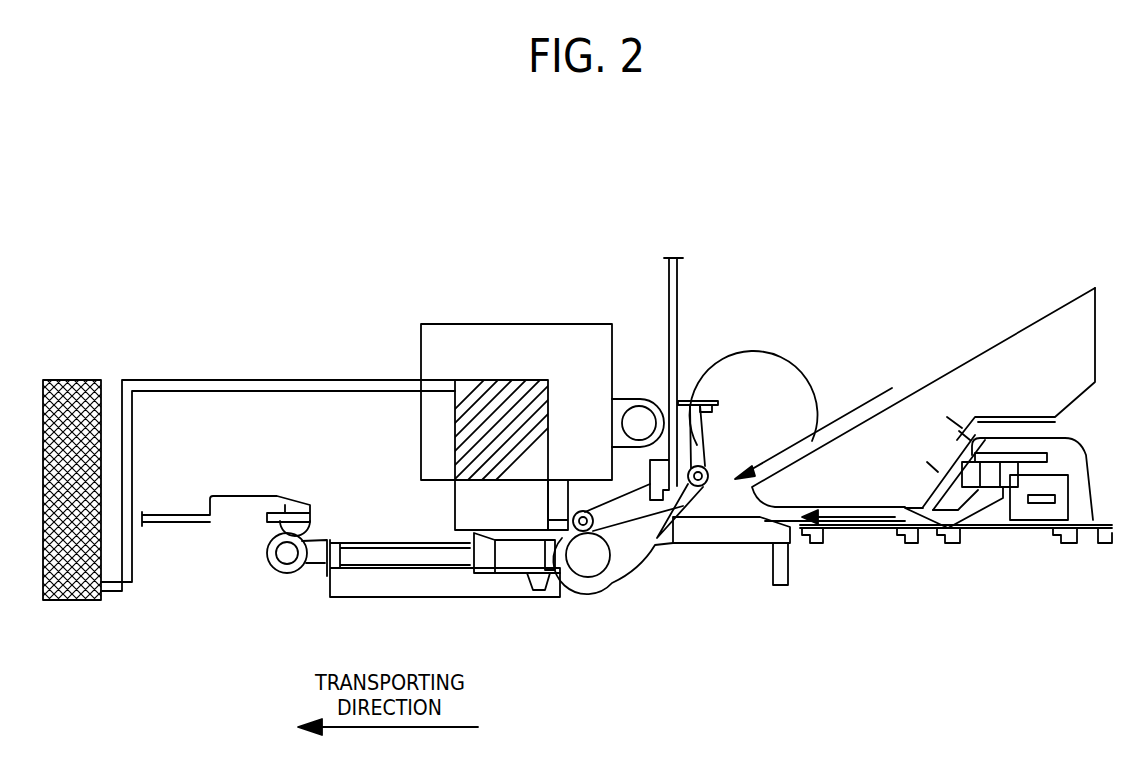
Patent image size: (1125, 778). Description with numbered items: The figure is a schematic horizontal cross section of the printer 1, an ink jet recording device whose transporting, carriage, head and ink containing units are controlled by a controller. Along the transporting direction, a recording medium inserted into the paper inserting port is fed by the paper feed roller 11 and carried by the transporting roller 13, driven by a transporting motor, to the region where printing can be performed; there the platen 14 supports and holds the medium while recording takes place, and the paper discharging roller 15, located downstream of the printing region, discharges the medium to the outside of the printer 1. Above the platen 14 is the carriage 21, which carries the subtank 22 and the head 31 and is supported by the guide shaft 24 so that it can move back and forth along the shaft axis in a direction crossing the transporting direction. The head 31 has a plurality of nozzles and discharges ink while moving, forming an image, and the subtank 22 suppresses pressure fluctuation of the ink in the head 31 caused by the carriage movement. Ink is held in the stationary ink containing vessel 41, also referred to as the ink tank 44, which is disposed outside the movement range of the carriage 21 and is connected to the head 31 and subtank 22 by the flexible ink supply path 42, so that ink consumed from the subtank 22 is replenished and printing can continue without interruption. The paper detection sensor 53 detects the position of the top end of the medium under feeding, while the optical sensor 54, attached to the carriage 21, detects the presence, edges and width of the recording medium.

The printer 1 is at (733, 229).
The paper feed roller 11 is at (755, 368).
The transporting roller 13 is at (590, 570).
The platen 14 is at (492, 570).
The paper discharging roller 15 is at (287, 558).
The carriage 21 is at (494, 340).
The subtank 22 is at (478, 388).
The guide shaft 24 is at (637, 413).
The head 31 is at (470, 517).
The ink containing vessel 41 is at (63, 452).
The ink tank 44 is at (70, 380).
The ink supply path 42 is at (215, 380).
The paper detection sensor 53 is at (663, 543).
The optical sensor 54 is at (557, 490).